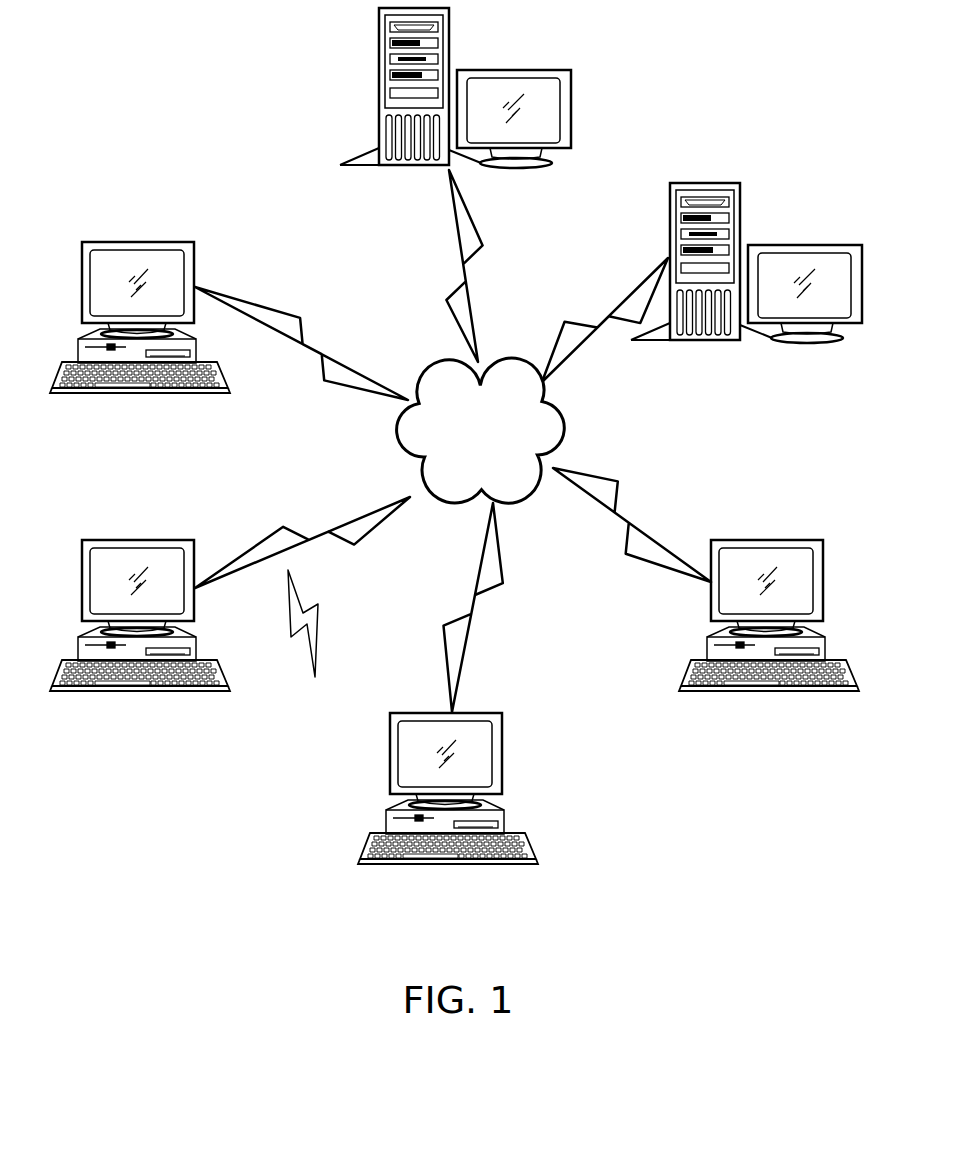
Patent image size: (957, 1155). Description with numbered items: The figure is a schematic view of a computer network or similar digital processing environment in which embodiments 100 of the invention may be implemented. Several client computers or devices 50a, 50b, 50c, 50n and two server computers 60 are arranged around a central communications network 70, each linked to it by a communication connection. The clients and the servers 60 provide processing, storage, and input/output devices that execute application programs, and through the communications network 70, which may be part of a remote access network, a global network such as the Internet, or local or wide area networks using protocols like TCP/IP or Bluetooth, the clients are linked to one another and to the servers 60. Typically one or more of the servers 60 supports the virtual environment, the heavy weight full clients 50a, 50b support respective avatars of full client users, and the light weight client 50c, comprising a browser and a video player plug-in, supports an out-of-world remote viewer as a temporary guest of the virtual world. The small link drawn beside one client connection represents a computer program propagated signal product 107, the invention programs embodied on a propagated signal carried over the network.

The embodiments of the present invention 100 is at (243, 80).
The client computer 50a is at (138, 242).
The client computer 50b is at (138, 540).
The light weight client 50c is at (503, 748).
The client computer 50n is at (767, 540).
The server computer 60 is at (511, 69).
The communications network 70 is at (467, 465).
The computer program propagated signal product 107 is at (318, 650).